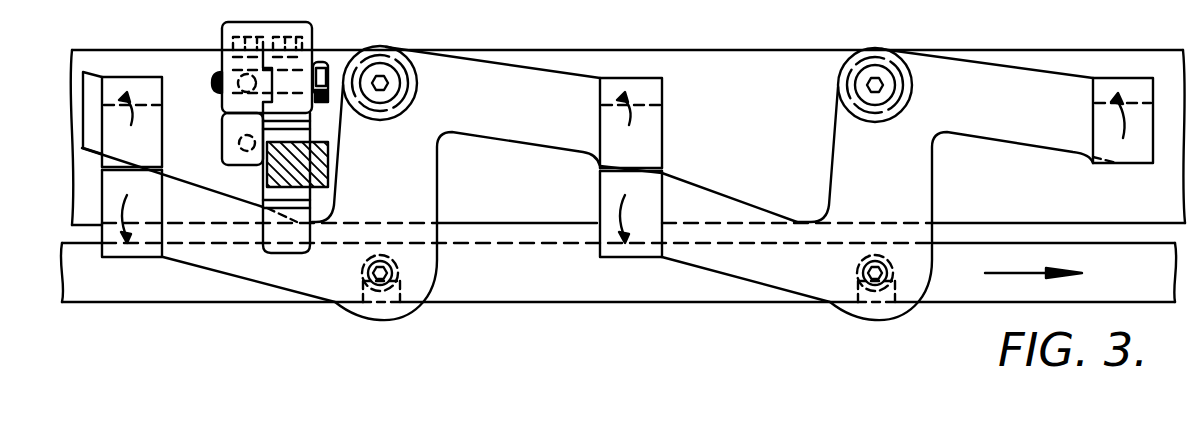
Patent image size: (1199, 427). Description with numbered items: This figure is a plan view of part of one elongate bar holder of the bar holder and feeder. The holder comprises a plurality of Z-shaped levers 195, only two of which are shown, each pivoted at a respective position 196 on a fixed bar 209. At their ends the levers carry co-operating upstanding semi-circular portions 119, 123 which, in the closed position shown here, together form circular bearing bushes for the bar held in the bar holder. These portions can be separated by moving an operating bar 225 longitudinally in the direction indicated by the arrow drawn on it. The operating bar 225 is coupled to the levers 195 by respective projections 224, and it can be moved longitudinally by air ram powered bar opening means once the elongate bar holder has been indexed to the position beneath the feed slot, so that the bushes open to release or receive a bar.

The upstanding semi-circular portion 119 is at (153, 122).
The upstanding semi-circular portion 123 is at (123, 238).
The Z-shaped lever 195 is at (489, 140).
The pivot position 196 is at (380, 83).
The fixed bar 209 is at (1096, 58).
The projection 224 is at (386, 284).
The operating bar 225 is at (549, 287).